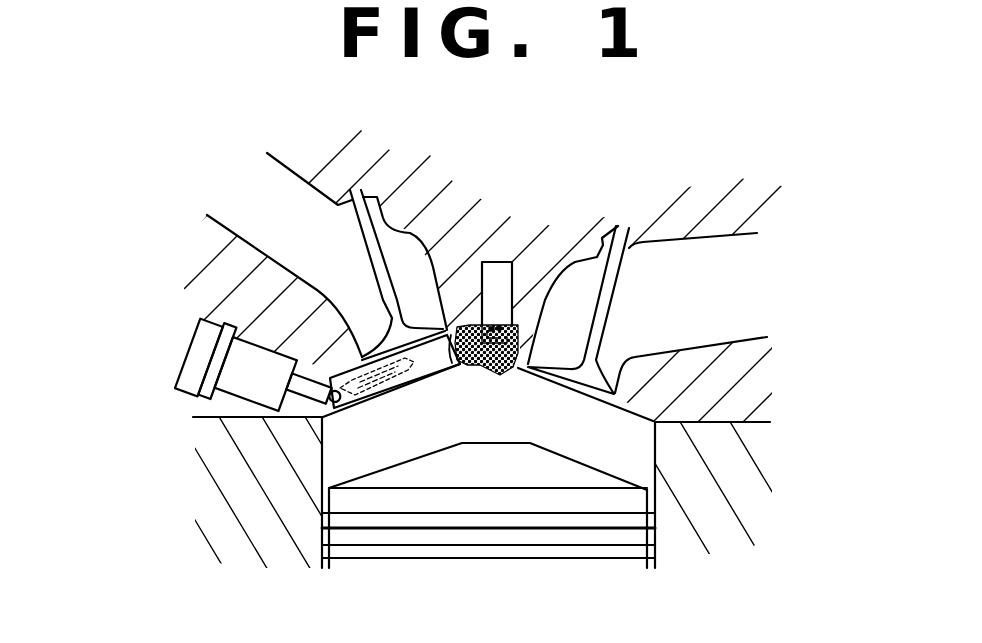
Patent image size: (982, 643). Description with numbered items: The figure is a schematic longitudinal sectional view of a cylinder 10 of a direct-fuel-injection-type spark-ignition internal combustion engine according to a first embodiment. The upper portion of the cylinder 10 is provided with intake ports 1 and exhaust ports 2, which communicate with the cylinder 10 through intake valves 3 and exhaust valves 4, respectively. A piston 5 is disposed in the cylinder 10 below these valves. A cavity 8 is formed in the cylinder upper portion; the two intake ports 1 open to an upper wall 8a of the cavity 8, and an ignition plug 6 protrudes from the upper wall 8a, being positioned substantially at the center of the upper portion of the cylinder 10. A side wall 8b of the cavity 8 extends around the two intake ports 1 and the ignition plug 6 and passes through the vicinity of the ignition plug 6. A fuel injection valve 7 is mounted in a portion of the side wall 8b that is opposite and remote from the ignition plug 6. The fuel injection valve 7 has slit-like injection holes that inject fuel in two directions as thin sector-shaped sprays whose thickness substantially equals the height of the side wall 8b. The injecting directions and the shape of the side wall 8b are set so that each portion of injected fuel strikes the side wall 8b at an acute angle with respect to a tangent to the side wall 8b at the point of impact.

The intake port 1 is at (290, 200).
The exhaust port 2 is at (694, 272).
The intake valve 3 is at (400, 320).
The exhaust valve 4 is at (598, 280).
The piston 5 is at (495, 475).
The ignition plug 6 is at (500, 280).
The fuel injection valve 7 is at (195, 362).
The cavity 8 is at (385, 392).
The upper wall of the cavity 8a is at (450, 352).
The side wall of the cavity 8b is at (505, 375).
The cylinder 10 is at (660, 440).